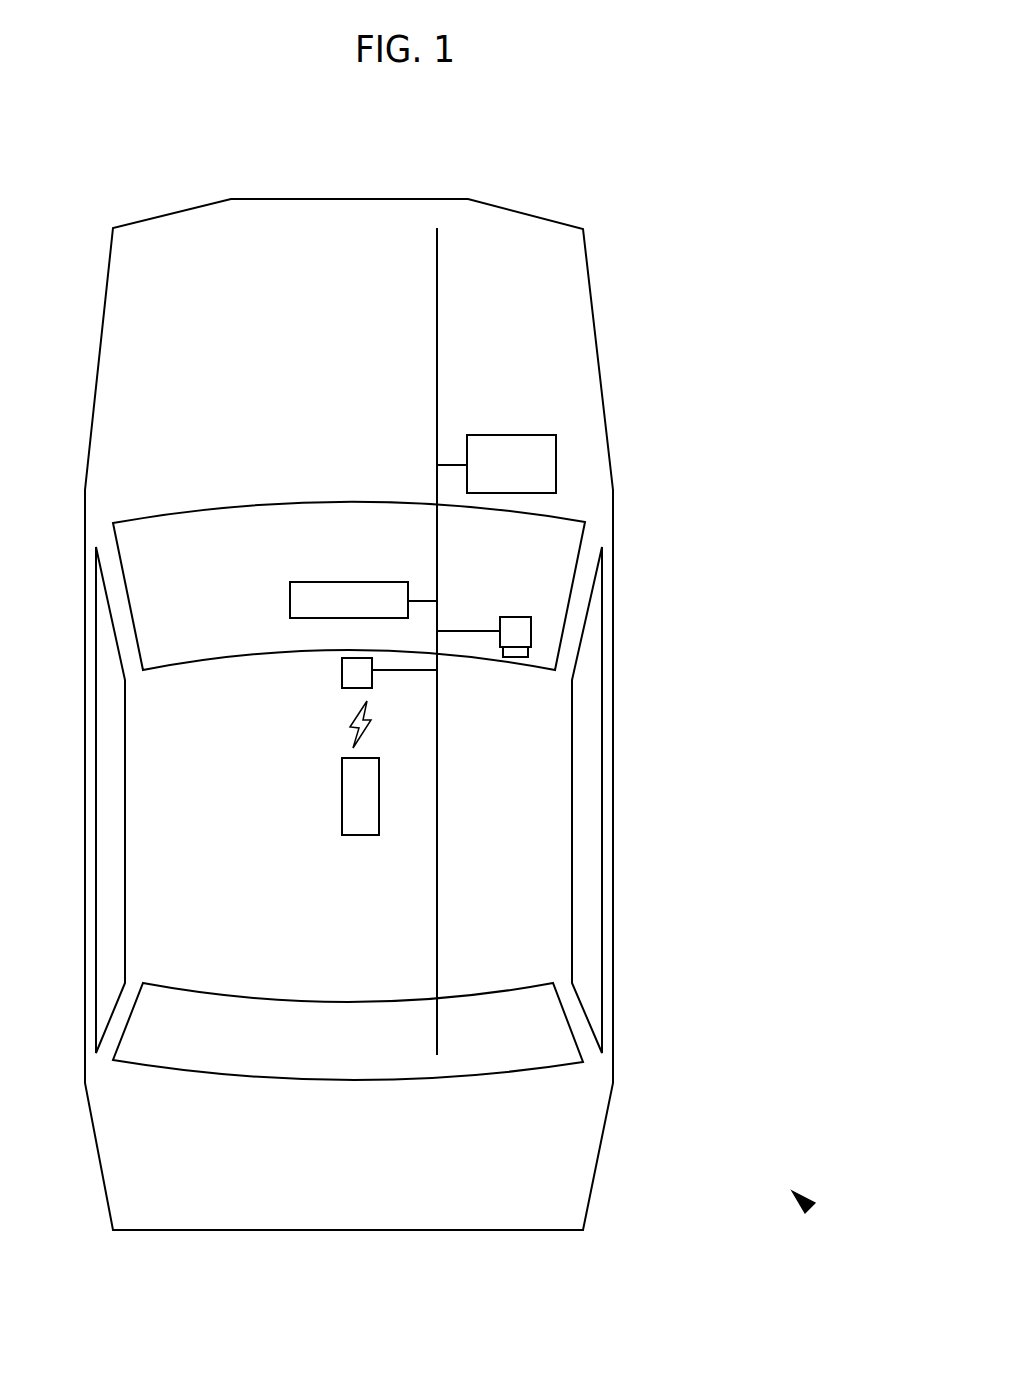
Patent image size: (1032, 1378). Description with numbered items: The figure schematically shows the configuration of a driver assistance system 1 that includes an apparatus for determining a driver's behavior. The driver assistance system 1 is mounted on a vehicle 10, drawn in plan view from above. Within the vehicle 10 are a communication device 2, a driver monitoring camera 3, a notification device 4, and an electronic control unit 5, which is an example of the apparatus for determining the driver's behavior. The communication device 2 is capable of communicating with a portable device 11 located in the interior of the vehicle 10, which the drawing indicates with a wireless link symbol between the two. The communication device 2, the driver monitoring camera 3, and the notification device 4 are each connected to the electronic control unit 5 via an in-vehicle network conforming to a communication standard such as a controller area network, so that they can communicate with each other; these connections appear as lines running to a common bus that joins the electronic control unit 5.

The driver assistance system 1 is at (810, 1208).
The vehicle 10 is at (613, 1031).
The communication device 2 is at (342, 676).
The driver monitoring camera 3 is at (531, 632).
The notification device 4 is at (290, 600).
The electronic control unit 5 is at (556, 468).
The portable device 11 is at (342, 812).